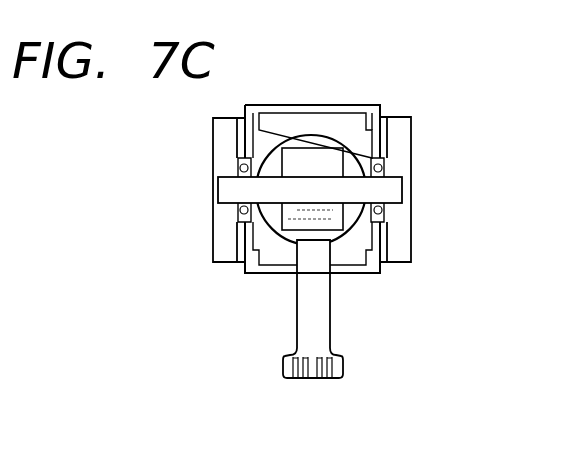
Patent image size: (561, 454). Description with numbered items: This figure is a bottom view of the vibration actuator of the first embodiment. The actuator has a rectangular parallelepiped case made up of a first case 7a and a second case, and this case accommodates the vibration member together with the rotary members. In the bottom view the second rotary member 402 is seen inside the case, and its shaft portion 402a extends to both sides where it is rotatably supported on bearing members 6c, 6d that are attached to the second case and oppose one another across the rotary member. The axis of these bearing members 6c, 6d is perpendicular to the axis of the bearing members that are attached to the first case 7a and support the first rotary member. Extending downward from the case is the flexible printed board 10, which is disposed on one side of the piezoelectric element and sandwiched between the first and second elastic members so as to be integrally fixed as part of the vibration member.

The first case 7a is at (363, 105).
The bearing member 6c is at (241, 166).
The bearing member 6d is at (383, 166).
The shaft portion 402a is at (226, 189).
The second rotary member 402 is at (290, 208).
The flexible printed board 10 is at (325, 315).